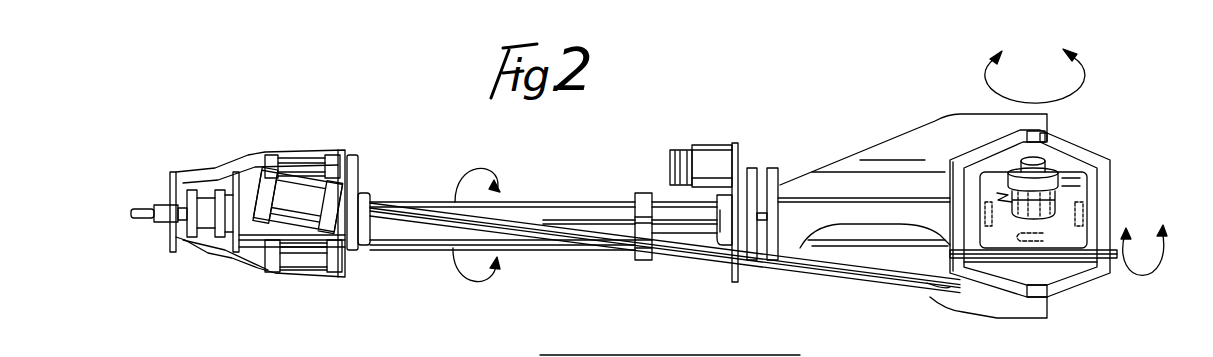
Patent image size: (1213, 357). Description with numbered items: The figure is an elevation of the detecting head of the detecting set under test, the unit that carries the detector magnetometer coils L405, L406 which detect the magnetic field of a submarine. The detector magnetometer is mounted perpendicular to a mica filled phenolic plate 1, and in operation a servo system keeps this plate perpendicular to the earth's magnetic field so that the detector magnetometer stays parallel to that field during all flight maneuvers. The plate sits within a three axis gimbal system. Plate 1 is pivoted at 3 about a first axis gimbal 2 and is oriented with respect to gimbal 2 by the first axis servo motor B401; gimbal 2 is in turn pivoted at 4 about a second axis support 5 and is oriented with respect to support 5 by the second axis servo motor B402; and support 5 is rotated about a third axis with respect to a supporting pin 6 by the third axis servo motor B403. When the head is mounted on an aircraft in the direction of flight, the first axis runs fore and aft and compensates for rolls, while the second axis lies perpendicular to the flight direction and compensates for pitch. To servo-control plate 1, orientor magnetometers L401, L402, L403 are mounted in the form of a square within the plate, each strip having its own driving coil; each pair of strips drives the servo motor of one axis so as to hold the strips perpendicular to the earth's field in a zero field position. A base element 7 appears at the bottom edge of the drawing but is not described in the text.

The mica filled phenolic plate 1 is at (1073, 177).
The first axis gimbal 2 is at (1100, 233).
The pivot 3 is at (1090, 222).
The pivot 4 is at (1044, 140).
The second axis support 5 is at (903, 153).
The supporting pin 6 is at (143, 217).
The base 7 is at (663, 353).
The first axis servo motor B401 is at (298, 200).
The second axis servo motor B402 is at (293, 259).
The third axis servo motor B403 is at (300, 167).
The orientor magnetometer L401 is at (1090, 200).
The orientor magnetometer L402 is at (975, 203).
The orientor magnetometer L403 is at (1028, 238).
The detector magnetometer coil L405 is at (1093, 183).
The detector magnetometer coil L406 is at (985, 193).